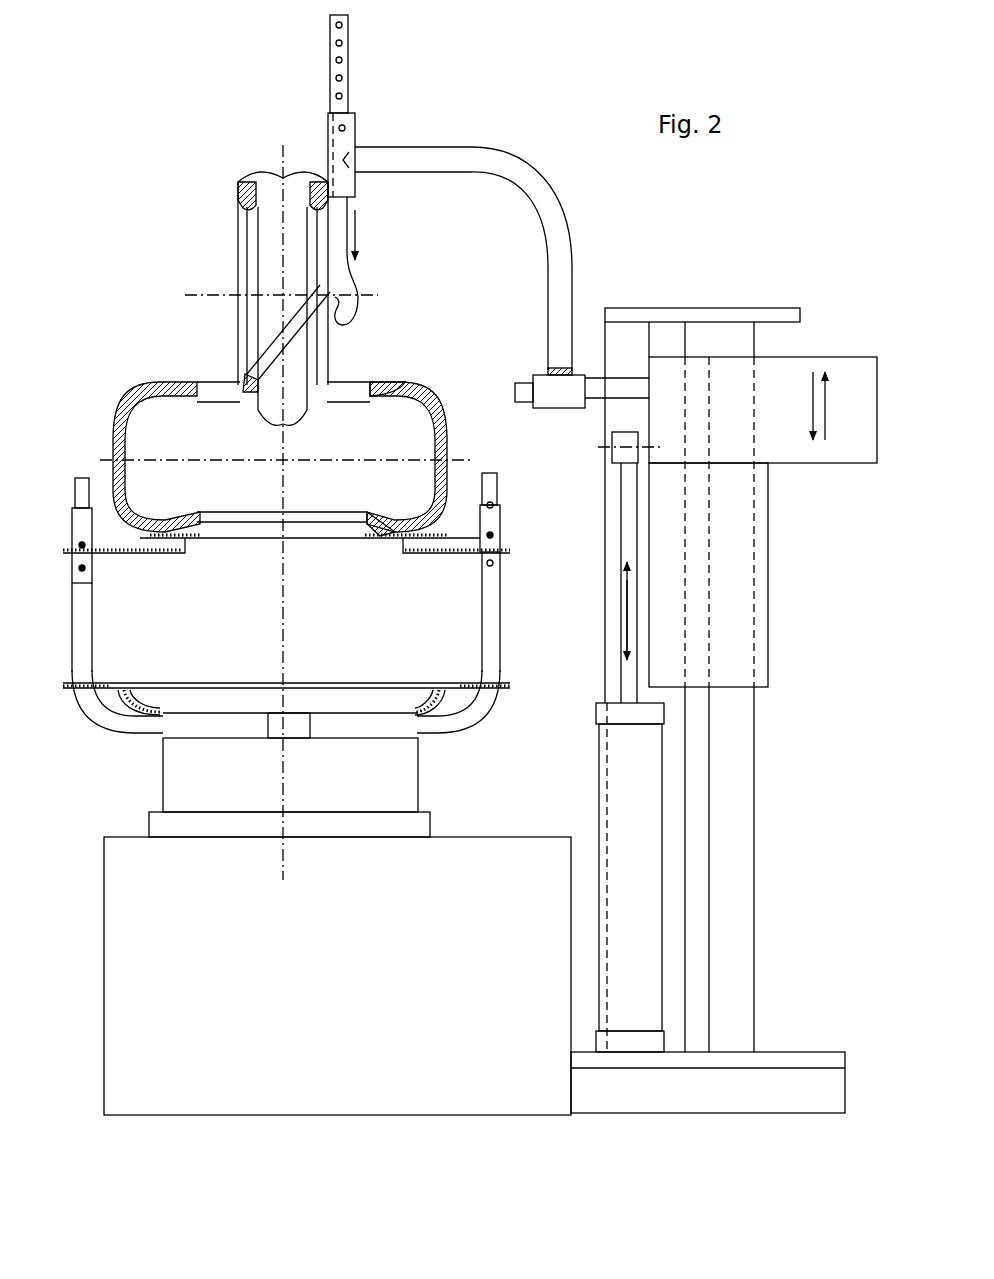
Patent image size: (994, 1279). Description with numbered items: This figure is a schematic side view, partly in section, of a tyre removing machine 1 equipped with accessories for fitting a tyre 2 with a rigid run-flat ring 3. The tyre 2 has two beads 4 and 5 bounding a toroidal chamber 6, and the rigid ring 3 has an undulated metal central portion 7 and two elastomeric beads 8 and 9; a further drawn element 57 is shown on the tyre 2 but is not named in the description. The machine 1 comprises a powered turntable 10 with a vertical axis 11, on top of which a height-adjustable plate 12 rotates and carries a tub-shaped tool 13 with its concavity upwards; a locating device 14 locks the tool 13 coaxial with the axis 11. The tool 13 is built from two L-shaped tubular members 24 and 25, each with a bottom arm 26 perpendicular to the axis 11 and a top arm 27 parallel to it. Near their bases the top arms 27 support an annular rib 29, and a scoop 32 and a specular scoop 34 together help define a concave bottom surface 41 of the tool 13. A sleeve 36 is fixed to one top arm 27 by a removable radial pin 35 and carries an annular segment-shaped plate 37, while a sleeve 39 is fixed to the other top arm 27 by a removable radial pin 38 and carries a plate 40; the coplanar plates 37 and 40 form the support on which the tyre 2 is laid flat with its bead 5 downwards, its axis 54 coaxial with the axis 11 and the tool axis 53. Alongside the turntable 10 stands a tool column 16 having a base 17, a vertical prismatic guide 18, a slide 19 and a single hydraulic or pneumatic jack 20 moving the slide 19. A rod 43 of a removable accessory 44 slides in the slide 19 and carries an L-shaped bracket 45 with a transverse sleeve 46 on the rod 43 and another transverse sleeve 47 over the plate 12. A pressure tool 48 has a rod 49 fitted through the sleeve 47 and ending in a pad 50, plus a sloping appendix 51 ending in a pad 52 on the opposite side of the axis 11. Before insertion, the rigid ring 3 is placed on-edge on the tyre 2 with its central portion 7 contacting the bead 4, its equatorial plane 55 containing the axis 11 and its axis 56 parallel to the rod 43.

The tyre removing machine 1 is at (672, 268).
The tyre 2 is at (289, 437).
The rigid ring 3 is at (238, 178).
The bead 4 is at (370, 392).
The bead 5 is at (372, 524).
The toroidal chamber 6 is at (130, 440).
The central portion 7 is at (288, 174).
The bead 8 is at (242, 197).
The bead 9 is at (330, 200).
The turntable 10 is at (135, 823).
The axis 11 is at (283, 862).
The plate 12 is at (415, 775).
The tub-shaped tool 13 is at (70, 700).
The locating device 14 is at (312, 722).
The tool column 16 is at (760, 778).
The base 17 is at (812, 1090).
The prismatic guide 18 is at (740, 752).
The slide 19 is at (783, 463).
The jack 20 is at (640, 913).
The tubular member 24 is at (508, 645).
The tubular member 25 is at (72, 648).
The bottom arm 26 is at (125, 727).
The top arm 27 is at (500, 597).
The annular rib 29 is at (335, 682).
The scoop 32 is at (462, 708).
The scoop 34 is at (128, 712).
The radial pin 35 is at (492, 535).
The sleeve 36 is at (500, 520).
The plate 37 is at (428, 552).
The radial pin 38 is at (80, 546).
The sleeve 39 is at (83, 535).
The plate 40 is at (150, 540).
The concave bottom surface 41 is at (235, 710).
The rod 43 is at (628, 385).
The removable accessory 44 is at (490, 140).
The L-shaped bracket 45 is at (508, 175).
The transverse sleeve 46 is at (548, 408).
The transverse sleeve 47 is at (343, 137).
The pressure tool 48 is at (358, 285).
The rod 49 is at (346, 66).
The pad 50 is at (365, 318).
The appendix 51 is at (283, 338).
The pad 52 is at (250, 368).
The axis 53 is at (283, 165).
The axis 54 is at (283, 497).
The equatorial plane 55 is at (283, 233).
The axis 56 is at (212, 295).
The right sidewall 57 is at (412, 457).